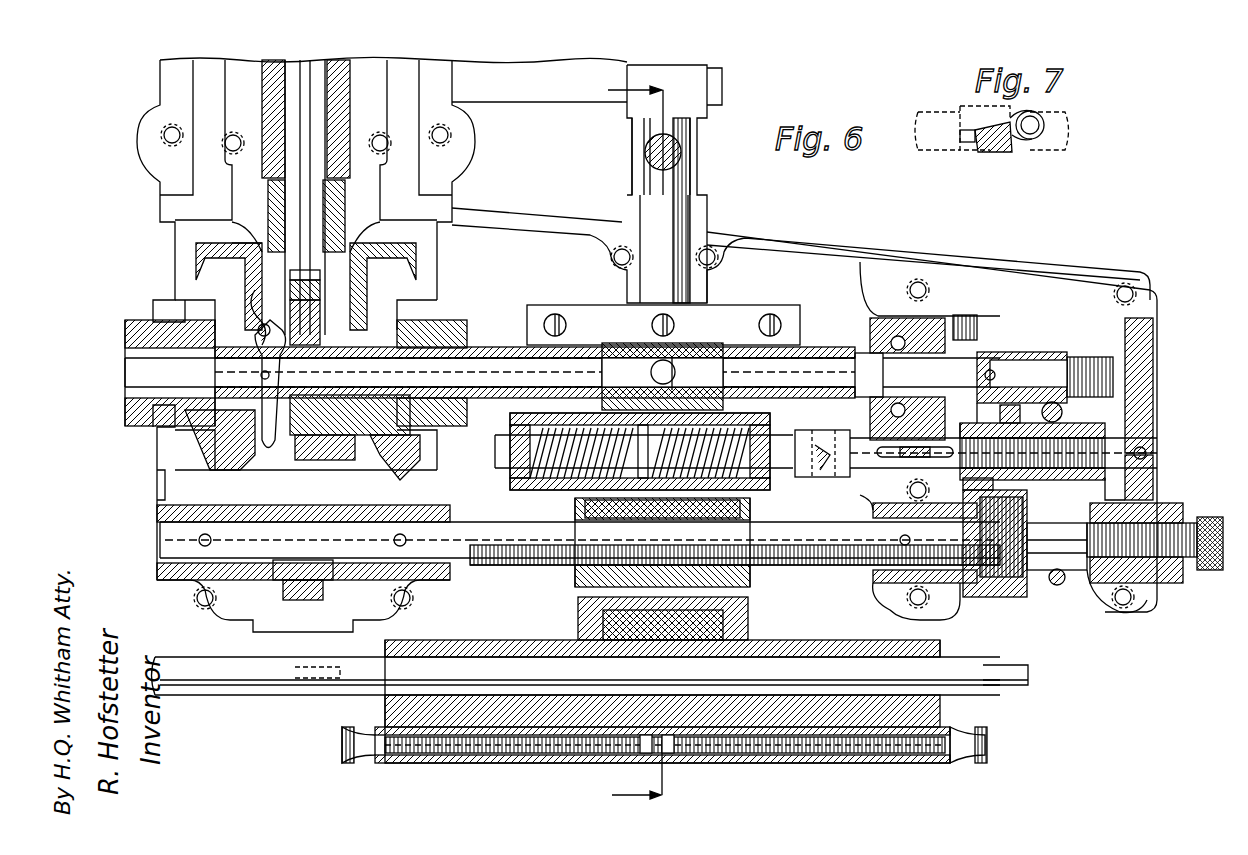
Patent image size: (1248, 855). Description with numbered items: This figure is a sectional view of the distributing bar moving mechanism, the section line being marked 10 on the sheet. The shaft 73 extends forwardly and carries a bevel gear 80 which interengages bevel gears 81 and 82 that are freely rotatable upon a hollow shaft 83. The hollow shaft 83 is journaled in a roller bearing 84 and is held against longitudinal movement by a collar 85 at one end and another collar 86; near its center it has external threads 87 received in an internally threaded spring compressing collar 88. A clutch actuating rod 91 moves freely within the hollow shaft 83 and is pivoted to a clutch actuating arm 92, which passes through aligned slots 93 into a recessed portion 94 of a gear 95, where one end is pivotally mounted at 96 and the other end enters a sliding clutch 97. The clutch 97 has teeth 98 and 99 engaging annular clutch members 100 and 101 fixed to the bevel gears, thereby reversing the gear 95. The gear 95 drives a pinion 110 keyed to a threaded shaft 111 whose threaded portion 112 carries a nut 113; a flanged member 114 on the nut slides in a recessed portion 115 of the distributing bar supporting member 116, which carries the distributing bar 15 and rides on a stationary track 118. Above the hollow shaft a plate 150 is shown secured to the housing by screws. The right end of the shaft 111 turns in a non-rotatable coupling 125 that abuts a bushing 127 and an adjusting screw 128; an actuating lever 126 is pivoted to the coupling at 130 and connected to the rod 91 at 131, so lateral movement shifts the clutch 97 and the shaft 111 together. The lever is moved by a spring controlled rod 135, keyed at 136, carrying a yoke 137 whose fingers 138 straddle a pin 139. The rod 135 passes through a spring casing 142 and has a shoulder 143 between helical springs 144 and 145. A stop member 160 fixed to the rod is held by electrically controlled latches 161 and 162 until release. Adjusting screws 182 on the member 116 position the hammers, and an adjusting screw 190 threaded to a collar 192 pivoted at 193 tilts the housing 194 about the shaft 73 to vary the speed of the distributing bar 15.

In FIG. 6, the section line 10 is at (620, 444).
In FIG. 6, the distributing bar 15 is at (170, 658).
In FIG. 6, the shaft 73 is at (300, 95).
In FIG. 6, the bevel gear 80 is at (225, 262).
In FIG. 6, the bevel gear 81 is at (410, 290).
In FIG. 6, the bevel gear 82 is at (195, 290).
In FIG. 6, the hollow shaft 83 is at (150, 372).
In FIG. 6, the roller bearing 84 is at (898, 336).
In FIG. 6, the collar 85 is at (862, 355).
In FIG. 6, the collar 86 is at (950, 318).
In FIG. 6, the external threads 87 is at (700, 345).
In FIG. 6, the spring compressing collar 88 is at (618, 345).
In FIG. 6, the clutch actuating rod 91 is at (498, 347).
In FIG. 6, the clutch actuating arm 92 is at (256, 316).
In FIG. 6, the aligned slots 93 is at (285, 380).
In FIG. 6, the recessed portion 94 is at (317, 316).
In FIG. 6, the gear 95 is at (320, 280).
In FIG. 6, the pivot 96 is at (290, 295).
In FIG. 6, the sliding clutch 97 is at (328, 462).
In FIG. 6, the teeth 98 is at (385, 462).
In FIG. 6, the teeth 99 is at (240, 462).
In FIG. 6, the annular clutch member 100 is at (385, 265).
In FIG. 6, the annular clutch member 101 is at (262, 250).
In FIG. 6, the pinion 110 is at (300, 605).
In FIG. 6, the threaded shaft 111 is at (175, 533).
In FIG. 6, the threaded portion 112 is at (495, 565).
In FIG. 6, the collar or nut 113 is at (730, 580).
In FIG. 6, the flanged member 114 is at (605, 615).
In FIG. 6, the recessed portion 115 is at (720, 617).
In FIG. 6, the distributing bar supporting member 116 is at (825, 643).
In FIG. 6, the stationary track 118 is at (1015, 688).
In FIG. 6, the coupling or collar 125 is at (990, 600).
In FIG. 6, the actuating lever 126 is at (1065, 418).
In FIG. 6, the bushing 127 is at (955, 598).
In FIG. 6, the adjusting screw 128 is at (1180, 523).
In FIG. 6, the pivot 130 is at (1068, 585).
In FIG. 6, the connection 131 is at (1038, 365).
In FIG. 6, the spring controlled rod 135 is at (1148, 448).
In FIG. 7, the spring controlled rod 135 is at (1040, 115).
In FIG. 6, the key 136 is at (895, 458).
In FIG. 6, the yoke 137 is at (1150, 415).
In FIG. 6, the projecting fingers 138 is at (1000, 520).
In FIG. 6, the pin 139 is at (1002, 438).
In FIG. 6, the spring casing 142 is at (525, 480).
In FIG. 6, the shoulder 143 is at (638, 470).
In FIG. 6, the helical spring 144 is at (745, 425).
In FIG. 6, the helical spring 145 is at (562, 425).
In FIG. 6, the cover plate 150 is at (745, 318).
In FIG. 6, the stop member 160 is at (830, 432).
In FIG. 7, the stop member 160 is at (1008, 152).
In FIG. 7, the electrically controlled latch 161 is at (968, 145).
In FIG. 6, the electrically controlled latch 162 is at (822, 470).
In FIG. 6, the adjusting screw 182 is at (415, 738).
In FIG. 6, the adjusting screw 190 is at (646, 150).
In FIG. 6, the collar 192 is at (640, 175).
In FIG. 6, the pivot 193 is at (668, 236).
In FIG. 6, the housing 194 is at (818, 245).